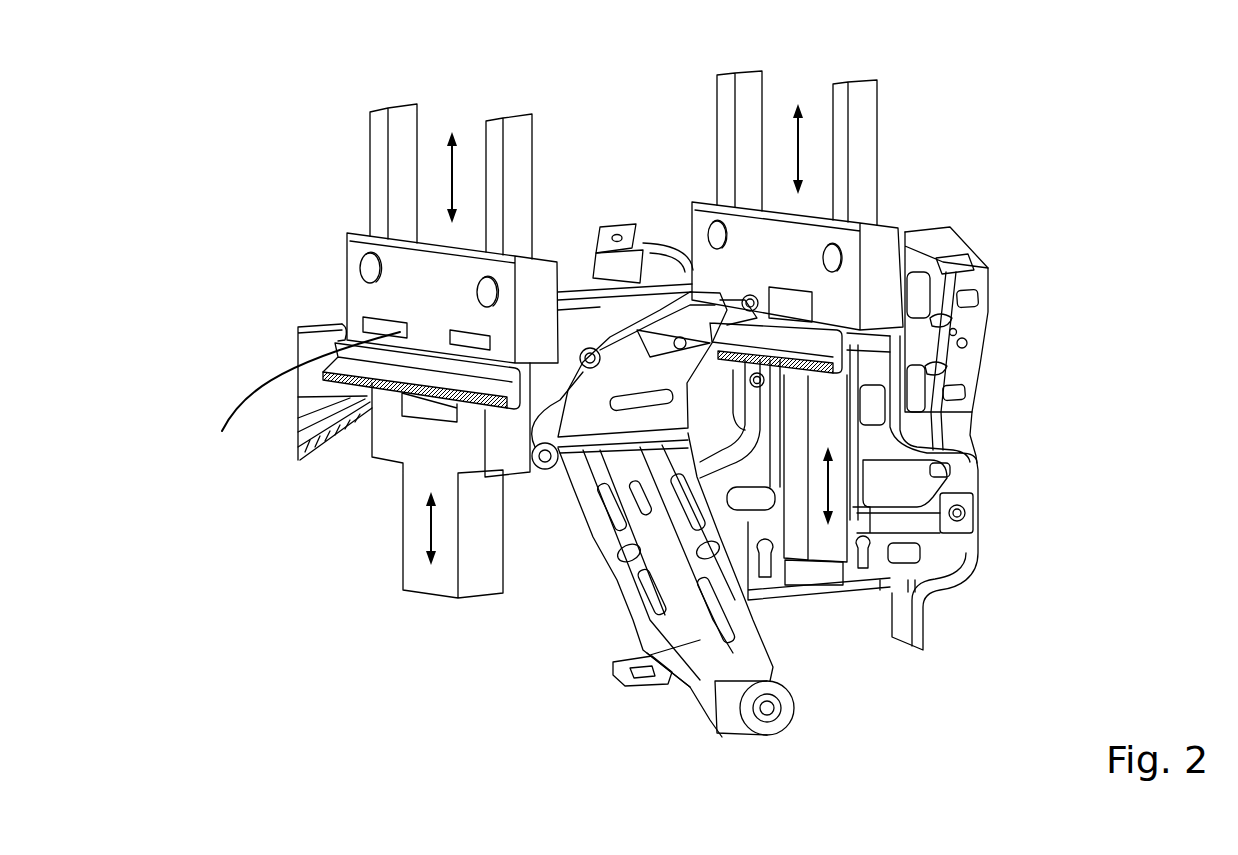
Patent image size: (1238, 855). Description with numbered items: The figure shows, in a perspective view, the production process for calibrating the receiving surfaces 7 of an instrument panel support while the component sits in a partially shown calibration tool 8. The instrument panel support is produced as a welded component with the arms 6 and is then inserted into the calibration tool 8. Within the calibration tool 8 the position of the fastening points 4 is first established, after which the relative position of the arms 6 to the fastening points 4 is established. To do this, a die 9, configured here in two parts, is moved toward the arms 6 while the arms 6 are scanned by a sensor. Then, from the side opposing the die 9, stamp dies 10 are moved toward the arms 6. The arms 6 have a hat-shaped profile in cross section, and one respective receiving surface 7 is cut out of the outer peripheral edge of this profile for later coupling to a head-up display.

The fastening points 4 is at (963, 383).
The arms 6 is at (375, 367).
The receiving surface 7 is at (306, 398).
The calibration tool 8 is at (258, 125).
The die 9 is at (357, 298).
The stamp dies 10 is at (828, 707).